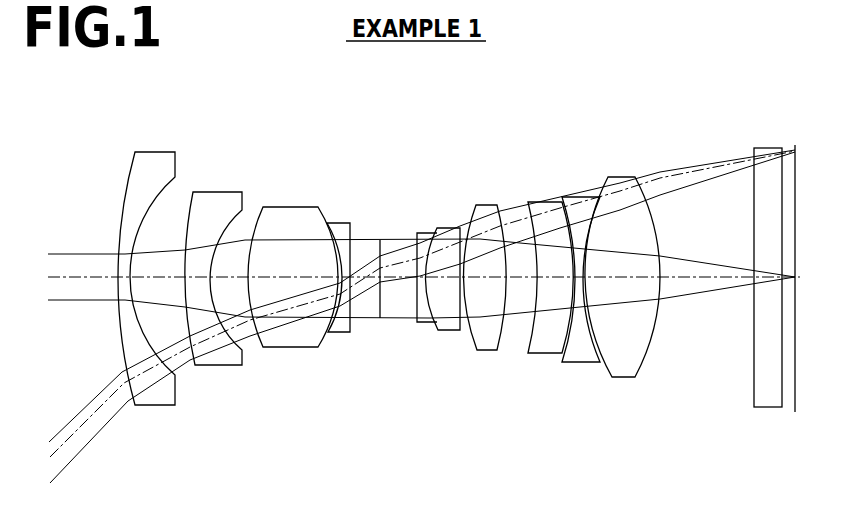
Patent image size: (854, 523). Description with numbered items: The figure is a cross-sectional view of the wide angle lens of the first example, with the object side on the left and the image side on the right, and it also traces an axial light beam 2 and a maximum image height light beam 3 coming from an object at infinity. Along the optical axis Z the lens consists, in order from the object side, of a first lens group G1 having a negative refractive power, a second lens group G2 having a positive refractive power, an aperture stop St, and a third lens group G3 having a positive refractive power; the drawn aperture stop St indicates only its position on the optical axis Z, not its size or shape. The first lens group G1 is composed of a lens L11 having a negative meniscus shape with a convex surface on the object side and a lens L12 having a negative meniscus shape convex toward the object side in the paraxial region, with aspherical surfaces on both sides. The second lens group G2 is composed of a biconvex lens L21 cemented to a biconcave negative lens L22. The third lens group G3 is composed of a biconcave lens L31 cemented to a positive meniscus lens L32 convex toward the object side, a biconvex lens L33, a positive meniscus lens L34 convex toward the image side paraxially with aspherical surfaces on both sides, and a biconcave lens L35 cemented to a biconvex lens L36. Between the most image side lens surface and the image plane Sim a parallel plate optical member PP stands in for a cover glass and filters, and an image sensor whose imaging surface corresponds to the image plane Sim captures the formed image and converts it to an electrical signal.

The axial light beam 2 is at (47, 247).
The maximum image height light beam 3 is at (50, 430).
The optical axis Z is at (98, 270).
The aperture stop St is at (379, 240).
The first lens group G1 is at (241, 112).
The second lens group G2 is at (350, 112).
The third lens group G3 is at (662, 112).
The lens L11 is at (155, 404).
The lens L12 is at (220, 366).
The lens L21 is at (298, 348).
The negative lens L22 is at (343, 333).
The lens L31 is at (425, 323).
The lens L32 is at (450, 331).
The lens L33 is at (488, 351).
The lens L34 is at (545, 354).
The lens L35 is at (582, 363).
The lens L36 is at (623, 378).
The parallel plate optical member PP is at (763, 148).
The image plane Sim is at (770, 236).